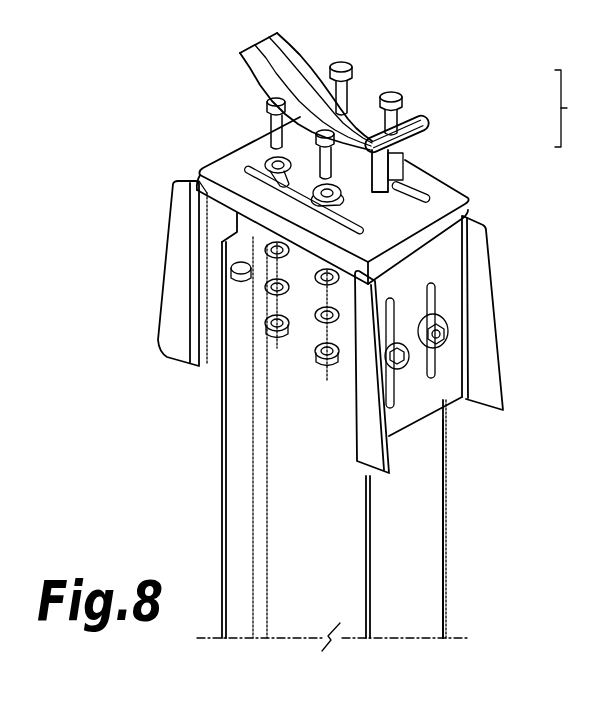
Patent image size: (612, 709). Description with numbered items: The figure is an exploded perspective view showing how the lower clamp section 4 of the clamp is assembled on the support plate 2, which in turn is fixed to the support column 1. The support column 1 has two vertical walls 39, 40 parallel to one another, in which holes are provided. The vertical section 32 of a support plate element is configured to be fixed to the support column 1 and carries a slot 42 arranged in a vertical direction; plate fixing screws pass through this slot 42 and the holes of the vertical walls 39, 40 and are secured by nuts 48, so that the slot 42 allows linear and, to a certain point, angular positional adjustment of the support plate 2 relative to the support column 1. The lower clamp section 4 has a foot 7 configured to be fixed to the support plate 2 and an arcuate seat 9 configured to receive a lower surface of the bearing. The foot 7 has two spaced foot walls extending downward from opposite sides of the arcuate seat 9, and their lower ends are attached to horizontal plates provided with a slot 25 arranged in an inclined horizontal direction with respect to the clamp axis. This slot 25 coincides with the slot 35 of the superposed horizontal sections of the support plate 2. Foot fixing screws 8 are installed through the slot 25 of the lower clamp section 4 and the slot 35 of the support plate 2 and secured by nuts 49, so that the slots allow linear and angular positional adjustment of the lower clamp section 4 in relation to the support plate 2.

The support column 1 is at (330, 523).
The support plate 2 is at (262, 208).
The lower clamp section 4 is at (572, 108).
The foot 7 is at (440, 157).
The foot fixing screws 8 is at (272, 116).
The arcuate seat 9 is at (440, 118).
The slot 25 is at (252, 172).
The vertical section 32 is at (407, 270).
The slot 35 is at (423, 187).
The vertical wall 39 is at (240, 477).
The vertical wall 40 is at (420, 587).
The slot 42 is at (434, 300).
The nuts 48 is at (447, 327).
The nuts 49 is at (274, 336).